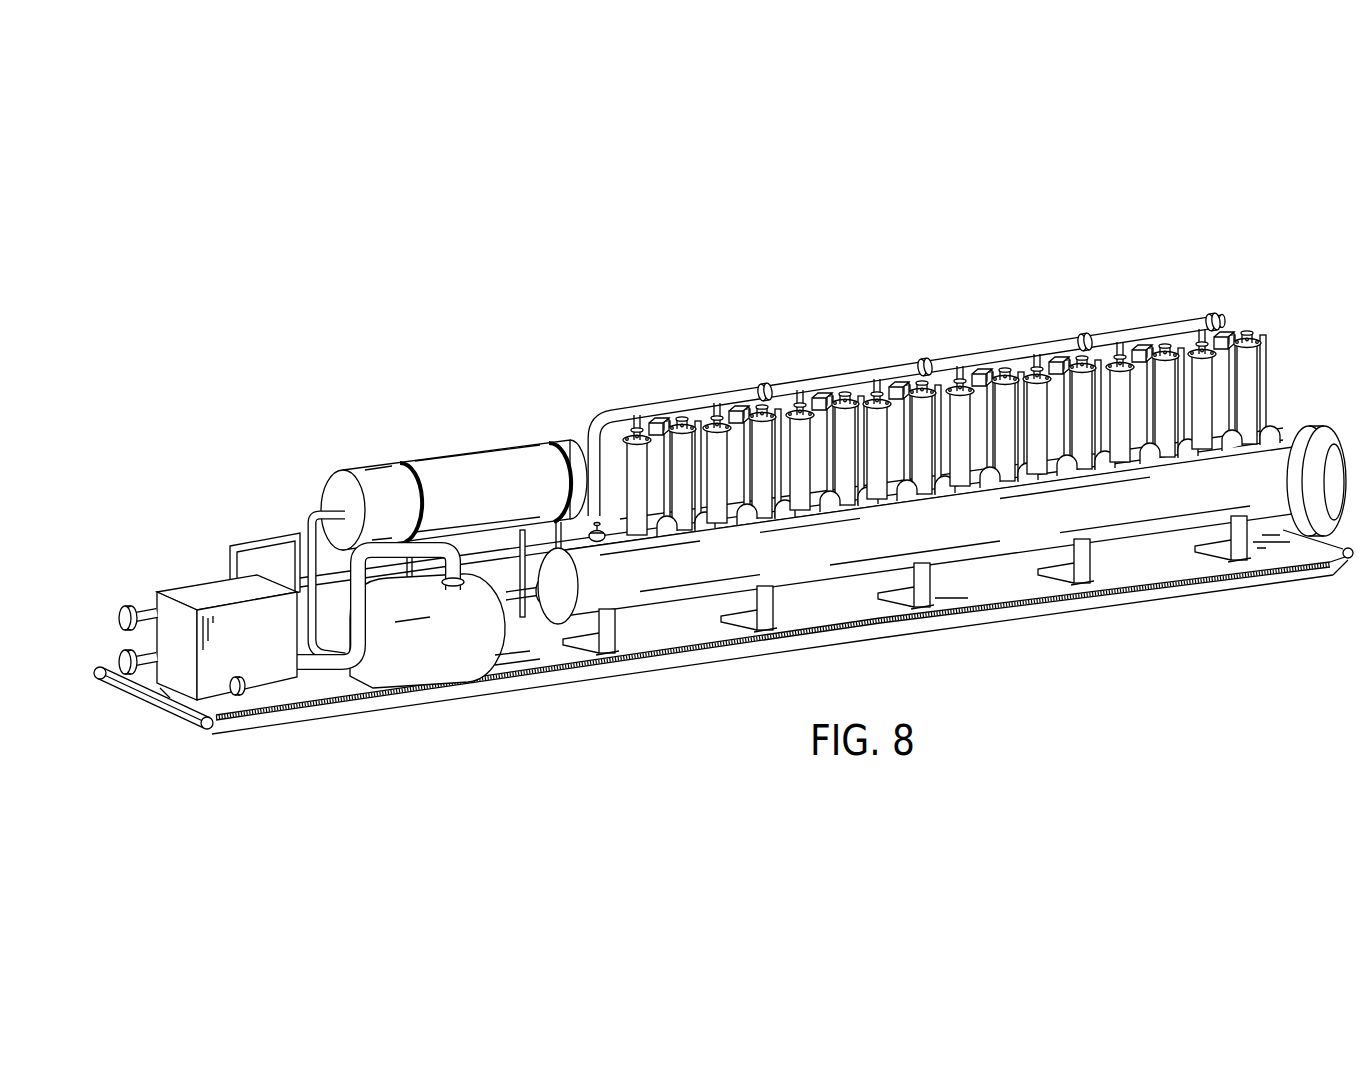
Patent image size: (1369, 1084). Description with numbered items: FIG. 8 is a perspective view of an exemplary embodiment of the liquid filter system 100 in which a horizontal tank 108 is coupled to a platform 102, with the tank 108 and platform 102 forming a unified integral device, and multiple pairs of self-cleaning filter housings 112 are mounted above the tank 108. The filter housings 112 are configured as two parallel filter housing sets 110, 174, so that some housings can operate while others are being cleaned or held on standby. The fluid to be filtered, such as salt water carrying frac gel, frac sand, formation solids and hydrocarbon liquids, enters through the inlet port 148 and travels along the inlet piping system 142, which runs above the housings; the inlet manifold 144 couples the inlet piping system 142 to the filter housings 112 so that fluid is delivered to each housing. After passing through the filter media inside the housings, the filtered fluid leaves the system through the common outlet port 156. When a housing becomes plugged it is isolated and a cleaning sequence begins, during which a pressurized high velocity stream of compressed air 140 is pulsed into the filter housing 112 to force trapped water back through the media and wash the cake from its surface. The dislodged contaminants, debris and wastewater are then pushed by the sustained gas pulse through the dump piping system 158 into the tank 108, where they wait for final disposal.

The liquid filter system 100 is at (706, 483).
The platform 102 is at (1162, 566).
The tank 108 is at (1062, 521).
The filter housing set 110 is at (950, 422).
The filter housing 112 is at (1255, 421).
The compressed air 140 is at (474, 480).
The inlet piping system 142 is at (845, 362).
The inlet manifold 144 is at (785, 374).
The inlet port 148 is at (119, 607).
The common outlet port 156 is at (108, 656).
The dump piping system 158 is at (286, 681).
The filter housing set 174 is at (659, 474).